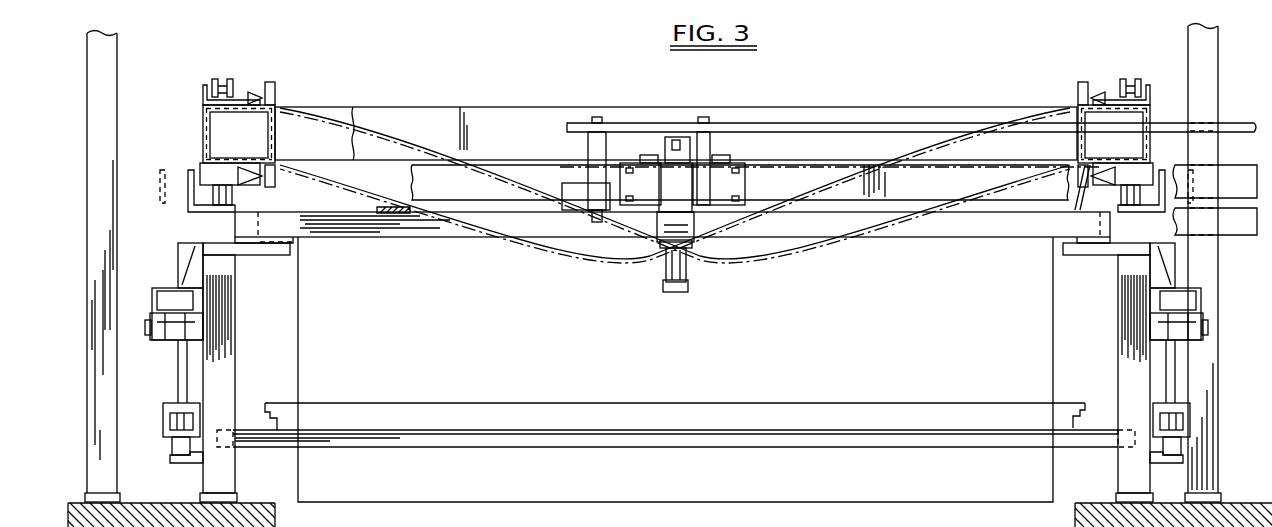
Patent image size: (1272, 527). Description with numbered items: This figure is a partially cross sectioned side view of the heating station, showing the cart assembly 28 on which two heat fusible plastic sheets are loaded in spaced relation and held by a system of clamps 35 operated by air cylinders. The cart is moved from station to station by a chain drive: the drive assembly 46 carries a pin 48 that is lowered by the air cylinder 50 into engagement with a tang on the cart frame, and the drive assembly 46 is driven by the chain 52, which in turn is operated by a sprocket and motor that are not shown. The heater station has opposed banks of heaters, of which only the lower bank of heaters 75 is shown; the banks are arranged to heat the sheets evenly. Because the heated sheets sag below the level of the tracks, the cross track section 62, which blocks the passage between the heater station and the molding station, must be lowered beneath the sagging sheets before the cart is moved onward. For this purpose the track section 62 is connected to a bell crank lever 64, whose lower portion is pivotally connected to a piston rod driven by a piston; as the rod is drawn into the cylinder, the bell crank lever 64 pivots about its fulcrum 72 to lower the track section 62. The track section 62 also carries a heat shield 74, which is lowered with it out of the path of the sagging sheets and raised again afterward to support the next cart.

The cart assembly 28 is at (538, 128).
The clamps 35 is at (278, 92).
The drive assembly 46 is at (684, 120).
The pin 48 is at (700, 143).
The air cylinder 50 is at (688, 270).
The chain 52 is at (876, 128).
The cross track section 62 is at (382, 228).
The bell crank lever 64 is at (185, 266).
The fulcrum 72 is at (168, 336).
The heat shield 74 is at (98, 222).
The lower bank of heaters 75 is at (545, 417).